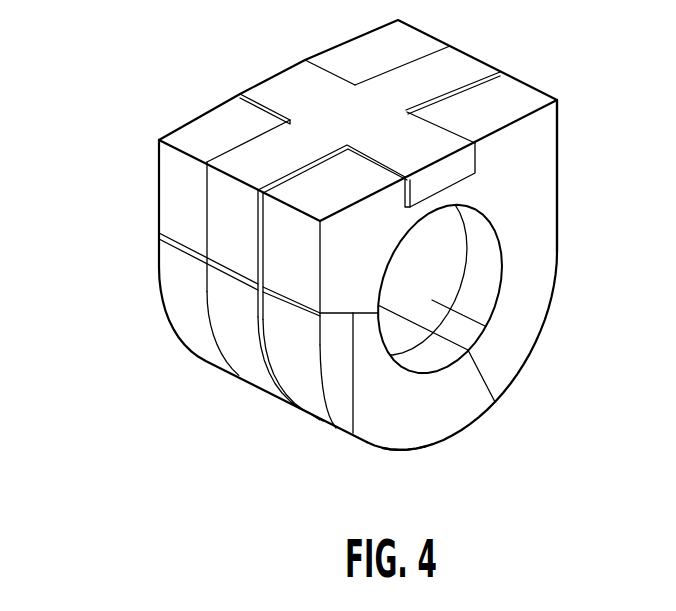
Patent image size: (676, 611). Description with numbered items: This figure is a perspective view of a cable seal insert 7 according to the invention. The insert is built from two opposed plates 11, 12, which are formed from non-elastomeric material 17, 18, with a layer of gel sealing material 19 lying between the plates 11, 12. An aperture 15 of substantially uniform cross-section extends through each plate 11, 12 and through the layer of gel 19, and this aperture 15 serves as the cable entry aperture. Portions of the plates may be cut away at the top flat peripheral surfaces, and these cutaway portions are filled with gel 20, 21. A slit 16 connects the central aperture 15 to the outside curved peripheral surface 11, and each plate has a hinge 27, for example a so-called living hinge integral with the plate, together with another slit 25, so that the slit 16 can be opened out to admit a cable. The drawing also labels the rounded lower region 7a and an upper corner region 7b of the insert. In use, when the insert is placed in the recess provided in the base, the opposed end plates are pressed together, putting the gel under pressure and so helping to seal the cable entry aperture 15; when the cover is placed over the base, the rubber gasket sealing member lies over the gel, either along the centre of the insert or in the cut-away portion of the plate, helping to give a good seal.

The cable seal insert 7 is at (114, 163).
The rounded bottom portion 7a is at (400, 452).
The top corner recess 7b is at (223, 123).
The plate 11 is at (518, 321).
The plate 12 is at (157, 158).
The aperture 15 is at (501, 263).
The slit 16 is at (482, 391).
The non-elastomeric material 17 is at (520, 97).
The non-elastomeric material 18 is at (393, 47).
The layer of gel sealing material 19 is at (517, 358).
The gel 20 is at (432, 148).
The gel 21 is at (293, 93).
The slit 25 is at (350, 425).
The hinge 27 is at (178, 238).